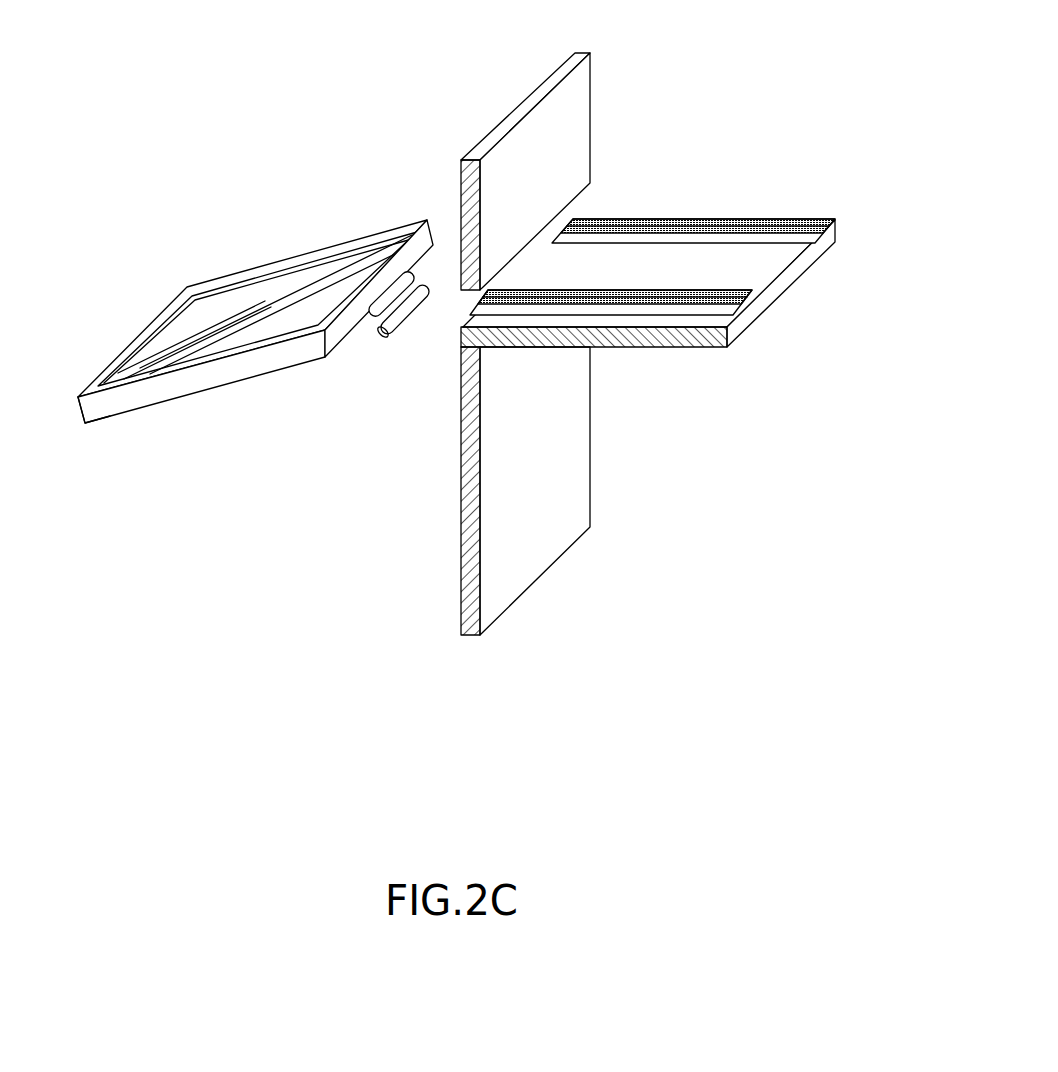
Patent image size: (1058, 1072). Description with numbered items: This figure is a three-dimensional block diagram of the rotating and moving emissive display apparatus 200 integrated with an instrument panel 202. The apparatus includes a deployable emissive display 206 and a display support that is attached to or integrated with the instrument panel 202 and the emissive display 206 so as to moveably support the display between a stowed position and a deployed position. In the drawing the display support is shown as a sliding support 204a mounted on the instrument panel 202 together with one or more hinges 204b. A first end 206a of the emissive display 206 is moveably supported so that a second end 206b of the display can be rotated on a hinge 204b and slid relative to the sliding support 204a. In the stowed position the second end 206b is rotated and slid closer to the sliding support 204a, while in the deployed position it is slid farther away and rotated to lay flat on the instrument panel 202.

The emissive display apparatus 200 is at (272, 117).
The instrument panel 202 is at (578, 55).
The sliding support 204a is at (802, 222).
The hinges 204b is at (397, 327).
The deployable emissive display 206 is at (257, 291).
The first end 206a is at (430, 236).
The second end 206b is at (77, 410).